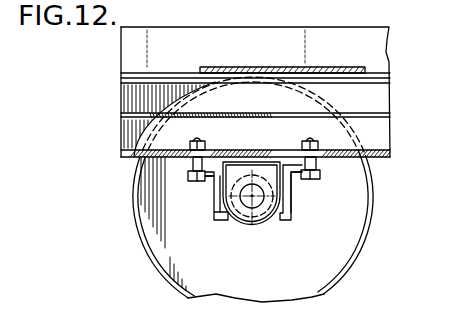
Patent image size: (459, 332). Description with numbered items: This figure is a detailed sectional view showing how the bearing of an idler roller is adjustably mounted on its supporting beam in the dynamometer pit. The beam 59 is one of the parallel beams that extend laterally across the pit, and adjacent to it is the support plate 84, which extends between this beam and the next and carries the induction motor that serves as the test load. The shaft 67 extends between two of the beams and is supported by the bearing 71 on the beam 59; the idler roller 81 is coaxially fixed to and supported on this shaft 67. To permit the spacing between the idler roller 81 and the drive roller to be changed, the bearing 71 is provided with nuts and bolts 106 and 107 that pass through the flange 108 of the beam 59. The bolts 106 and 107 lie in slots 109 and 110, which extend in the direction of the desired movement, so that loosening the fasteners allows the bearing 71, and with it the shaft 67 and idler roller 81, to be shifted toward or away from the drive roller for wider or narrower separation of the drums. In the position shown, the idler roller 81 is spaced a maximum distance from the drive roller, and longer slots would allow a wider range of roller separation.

The beam 59 is at (381, 134).
The support plate 84 is at (242, 68).
The flange 108 is at (367, 170).
The idler roller 81 is at (134, 216).
The slot 109 is at (178, 150).
The slot 110 is at (282, 150).
The nut and bolt 106 is at (198, 181).
The nut and bolt 107 is at (305, 182).
The shaft 67 is at (253, 208).
The bearing 71 is at (271, 222).